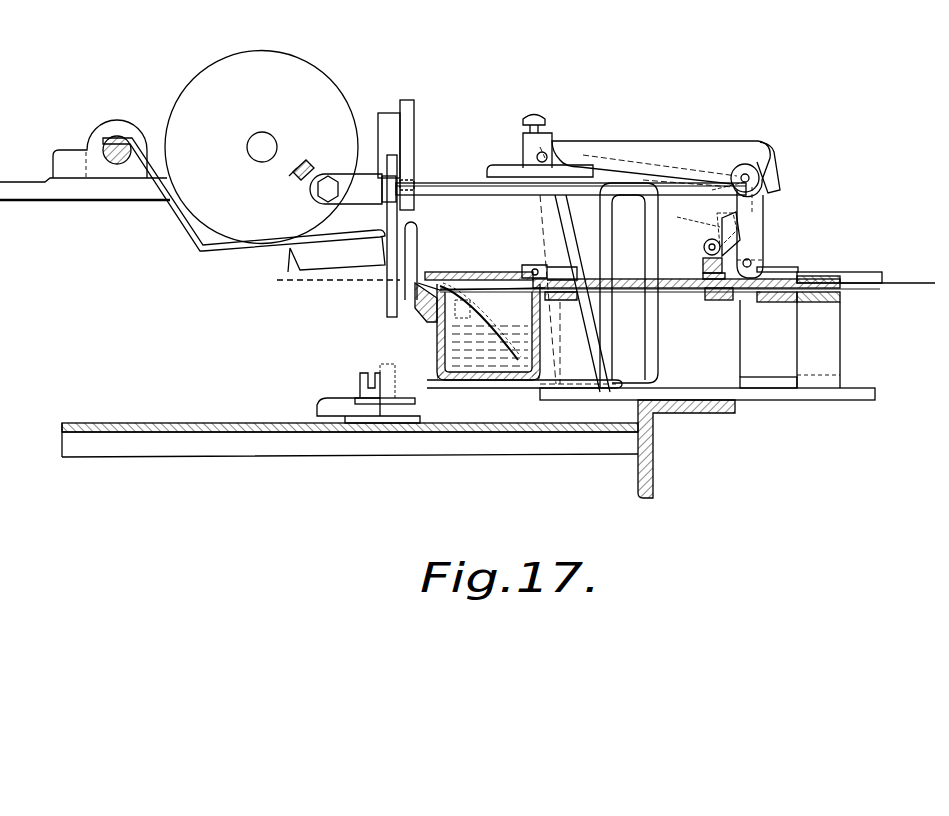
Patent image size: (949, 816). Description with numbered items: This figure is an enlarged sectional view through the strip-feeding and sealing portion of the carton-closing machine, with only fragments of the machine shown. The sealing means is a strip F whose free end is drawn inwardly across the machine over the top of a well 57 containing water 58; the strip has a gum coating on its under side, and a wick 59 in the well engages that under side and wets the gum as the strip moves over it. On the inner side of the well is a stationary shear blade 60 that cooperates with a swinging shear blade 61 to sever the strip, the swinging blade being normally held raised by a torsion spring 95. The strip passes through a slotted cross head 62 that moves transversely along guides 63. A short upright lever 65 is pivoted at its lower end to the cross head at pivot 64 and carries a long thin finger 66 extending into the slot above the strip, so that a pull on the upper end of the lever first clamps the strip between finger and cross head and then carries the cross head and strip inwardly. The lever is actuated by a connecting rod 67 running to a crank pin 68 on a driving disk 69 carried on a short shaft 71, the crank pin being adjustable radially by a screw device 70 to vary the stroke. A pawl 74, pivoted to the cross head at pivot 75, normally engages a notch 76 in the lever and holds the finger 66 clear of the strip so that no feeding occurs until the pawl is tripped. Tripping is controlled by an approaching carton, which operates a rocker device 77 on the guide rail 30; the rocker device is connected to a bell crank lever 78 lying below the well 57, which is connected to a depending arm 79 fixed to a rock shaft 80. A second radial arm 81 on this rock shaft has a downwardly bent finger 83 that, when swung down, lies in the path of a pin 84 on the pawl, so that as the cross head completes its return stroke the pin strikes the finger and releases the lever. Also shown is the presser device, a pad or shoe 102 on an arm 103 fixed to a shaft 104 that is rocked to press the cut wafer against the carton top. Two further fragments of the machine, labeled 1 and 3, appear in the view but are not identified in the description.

The base 1 is at (200, 455).
The base plate 3 is at (122, 422).
The guide rail 30 is at (360, 382).
The well 57 is at (437, 352).
The water 58 is at (513, 335).
The wick 59 is at (535, 368).
The stationary shear blade 60 is at (428, 275).
The swinging shear blade 61 is at (420, 232).
The cross head 62 is at (718, 300).
The guides 63 is at (668, 292).
The pivot 64 is at (752, 263).
The lever 65 is at (740, 212).
The finger 66 is at (705, 272).
The connecting rod 67 is at (450, 186).
The crank pin 68 is at (312, 192).
The driving disk 69 is at (300, 78).
The screw device 70 is at (300, 166).
The shaft 71 is at (264, 135).
The pawl 74 is at (745, 254).
The pivot 75 is at (708, 242).
The notch 76 is at (763, 215).
The rocker device 77 is at (327, 404).
The bell crank lever 78 is at (545, 395).
The depending arm 79 is at (598, 352).
The rock shaft 80 is at (547, 152).
The radial arm 81 is at (680, 160).
The finger 83 is at (775, 178).
The pin 84 is at (720, 224).
The torsion spring 95 is at (432, 332).
The pad or shoe 102 is at (300, 270).
The arm 103 is at (213, 256).
The shaft 104 is at (115, 163).
The strip F is at (902, 283).